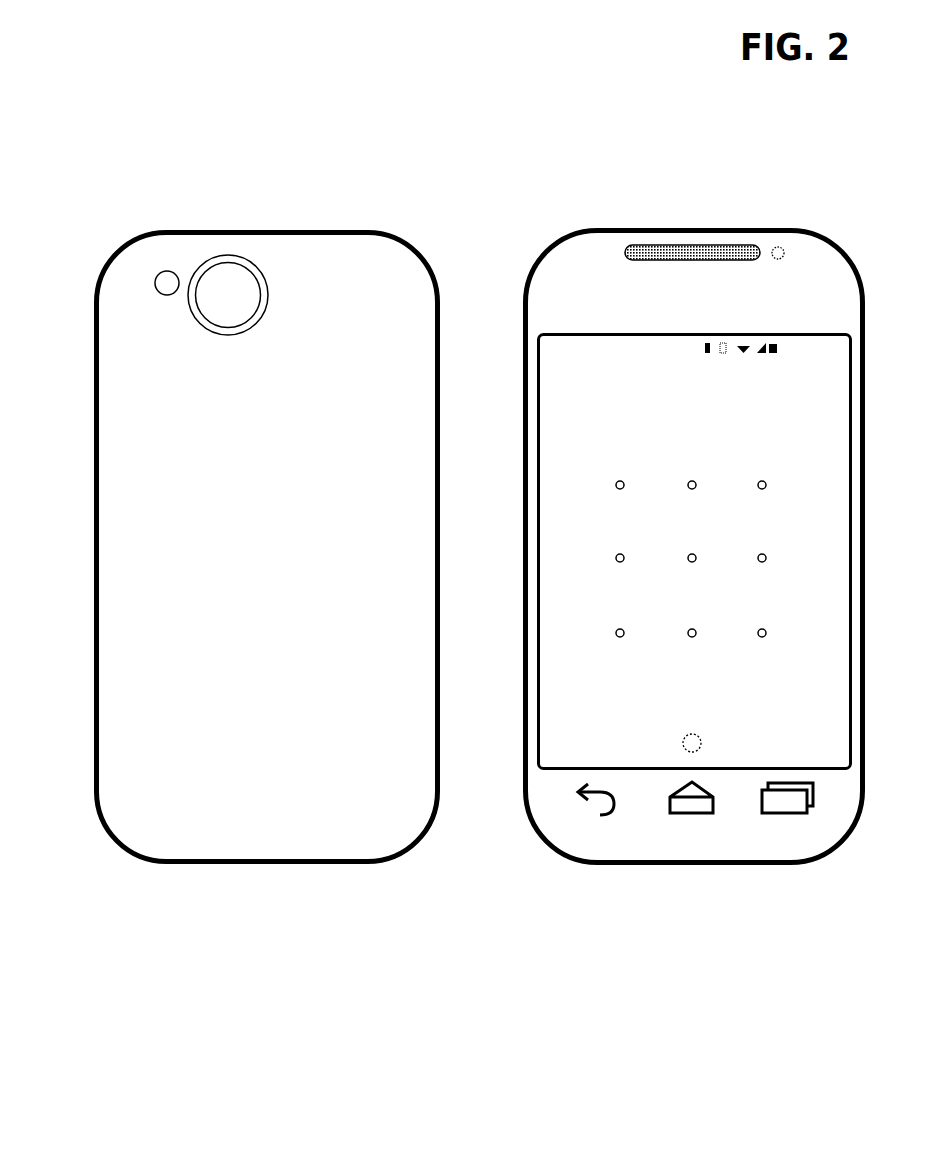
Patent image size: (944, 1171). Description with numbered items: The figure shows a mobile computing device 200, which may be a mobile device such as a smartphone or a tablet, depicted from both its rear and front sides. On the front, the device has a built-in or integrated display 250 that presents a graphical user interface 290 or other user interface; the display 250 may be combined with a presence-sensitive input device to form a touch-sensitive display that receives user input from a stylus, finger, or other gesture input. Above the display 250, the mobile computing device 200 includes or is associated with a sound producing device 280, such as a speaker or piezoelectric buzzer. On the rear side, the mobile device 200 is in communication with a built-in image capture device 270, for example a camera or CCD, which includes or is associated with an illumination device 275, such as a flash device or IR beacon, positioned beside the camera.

The mobile computing device 200 is at (265, 866).
The display 250 is at (568, 768).
The image capture device 270 is at (207, 257).
The illumination device 275 is at (158, 297).
The sound producing device 280 is at (625, 249).
The graphical user interface 290 is at (577, 676).